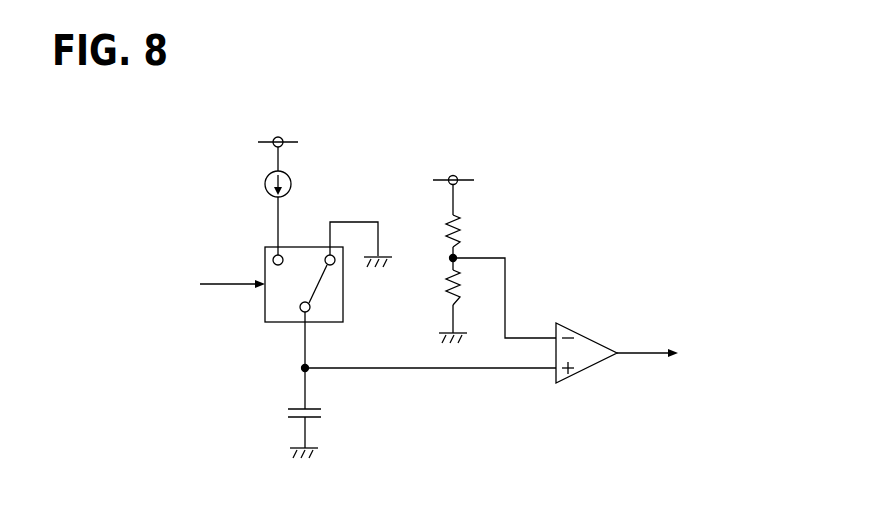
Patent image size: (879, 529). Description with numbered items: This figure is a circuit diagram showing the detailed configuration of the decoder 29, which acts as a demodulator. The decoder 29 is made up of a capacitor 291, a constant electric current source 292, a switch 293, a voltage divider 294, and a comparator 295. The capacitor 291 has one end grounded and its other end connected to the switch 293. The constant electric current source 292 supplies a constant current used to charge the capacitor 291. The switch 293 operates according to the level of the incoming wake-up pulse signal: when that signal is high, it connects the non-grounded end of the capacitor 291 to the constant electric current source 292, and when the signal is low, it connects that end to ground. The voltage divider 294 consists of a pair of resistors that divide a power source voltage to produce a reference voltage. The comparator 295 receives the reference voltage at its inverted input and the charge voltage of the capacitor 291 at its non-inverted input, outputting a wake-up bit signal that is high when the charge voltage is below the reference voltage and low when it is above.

The decoder 29 is at (345, 158).
The capacitor 291 is at (298, 413).
The constant electric current source 292 is at (269, 178).
The switch 293 is at (289, 323).
The voltage divider 294 is at (490, 199).
The comparator 295 is at (578, 334).